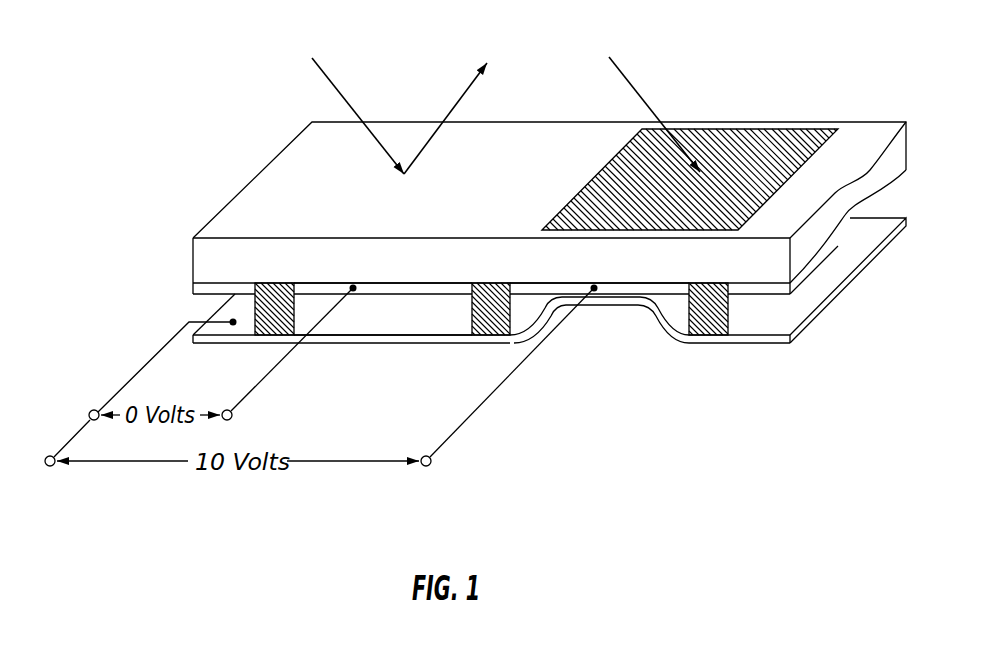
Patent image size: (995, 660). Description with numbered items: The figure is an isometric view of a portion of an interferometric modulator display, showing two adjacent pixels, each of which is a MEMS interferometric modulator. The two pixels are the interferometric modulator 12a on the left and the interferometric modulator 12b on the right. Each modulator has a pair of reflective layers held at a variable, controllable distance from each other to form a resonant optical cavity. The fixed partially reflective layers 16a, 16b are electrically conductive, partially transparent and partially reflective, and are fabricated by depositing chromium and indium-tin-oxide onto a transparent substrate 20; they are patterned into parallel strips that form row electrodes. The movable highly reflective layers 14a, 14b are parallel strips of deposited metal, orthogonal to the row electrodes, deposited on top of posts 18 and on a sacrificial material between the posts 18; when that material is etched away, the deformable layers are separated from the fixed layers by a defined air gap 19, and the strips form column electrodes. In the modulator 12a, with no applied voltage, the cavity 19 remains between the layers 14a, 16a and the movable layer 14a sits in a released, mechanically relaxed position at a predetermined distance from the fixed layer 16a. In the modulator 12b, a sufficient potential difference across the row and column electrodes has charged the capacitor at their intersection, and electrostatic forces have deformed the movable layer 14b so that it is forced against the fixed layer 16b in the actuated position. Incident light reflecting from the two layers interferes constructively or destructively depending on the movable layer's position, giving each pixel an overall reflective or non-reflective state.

The interferometric modulator 12a is at (304, 192).
The interferometric modulator 12b is at (755, 155).
The movable highly reflective layer 14a is at (310, 340).
The movable highly reflective layer 14b is at (540, 313).
The fixed partially reflective layer 16a is at (378, 288).
The fixed partially reflective layer 16b is at (570, 288).
The posts 18 is at (279, 326).
The air gap 19 is at (423, 315).
The transparent substrate 20 is at (838, 198).